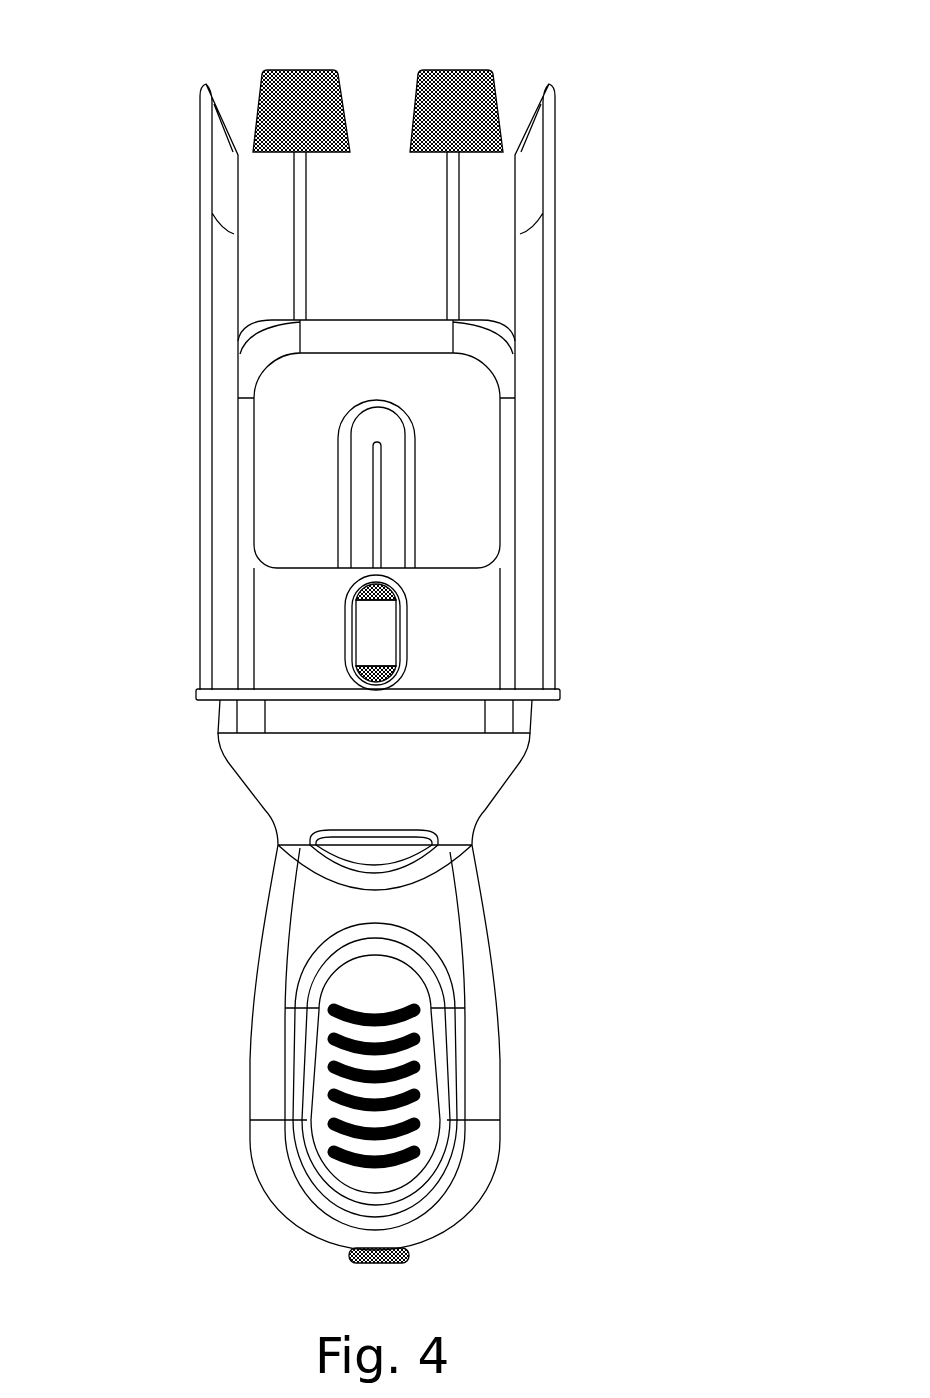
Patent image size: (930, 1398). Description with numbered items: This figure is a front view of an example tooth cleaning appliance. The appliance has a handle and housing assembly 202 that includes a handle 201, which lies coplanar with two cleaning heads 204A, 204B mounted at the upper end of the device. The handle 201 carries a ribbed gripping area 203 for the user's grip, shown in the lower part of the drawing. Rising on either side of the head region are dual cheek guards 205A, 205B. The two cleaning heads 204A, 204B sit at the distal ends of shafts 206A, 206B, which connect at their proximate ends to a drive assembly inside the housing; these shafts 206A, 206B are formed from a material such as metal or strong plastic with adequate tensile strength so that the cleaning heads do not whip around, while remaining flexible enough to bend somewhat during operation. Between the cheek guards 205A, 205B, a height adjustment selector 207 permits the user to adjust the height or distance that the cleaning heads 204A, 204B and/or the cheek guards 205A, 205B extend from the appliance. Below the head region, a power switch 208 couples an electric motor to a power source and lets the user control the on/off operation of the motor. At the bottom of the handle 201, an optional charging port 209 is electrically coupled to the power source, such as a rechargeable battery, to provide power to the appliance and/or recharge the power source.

The handle 201 is at (497, 1048).
The handle and housing assembly 202 is at (478, 771).
The ribbed gripping area 203 is at (303, 1031).
The cleaning head 204A is at (618, 37).
The cleaning head 204B is at (237, 67).
The cheek guard 205A is at (680, 357).
The cheek guard 205B is at (177, 385).
The shaft 206A is at (485, 201).
The shaft 206B is at (268, 201).
The height adjustment selector 207 is at (343, 483).
The power switch 208 is at (326, 853).
The charging port 209 is at (325, 1261).